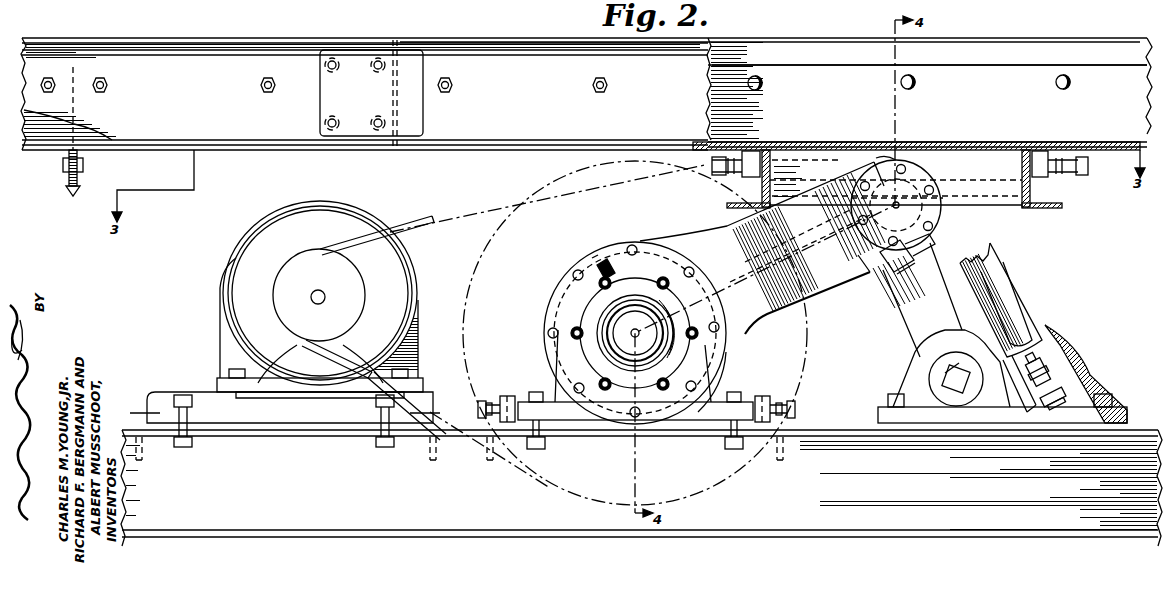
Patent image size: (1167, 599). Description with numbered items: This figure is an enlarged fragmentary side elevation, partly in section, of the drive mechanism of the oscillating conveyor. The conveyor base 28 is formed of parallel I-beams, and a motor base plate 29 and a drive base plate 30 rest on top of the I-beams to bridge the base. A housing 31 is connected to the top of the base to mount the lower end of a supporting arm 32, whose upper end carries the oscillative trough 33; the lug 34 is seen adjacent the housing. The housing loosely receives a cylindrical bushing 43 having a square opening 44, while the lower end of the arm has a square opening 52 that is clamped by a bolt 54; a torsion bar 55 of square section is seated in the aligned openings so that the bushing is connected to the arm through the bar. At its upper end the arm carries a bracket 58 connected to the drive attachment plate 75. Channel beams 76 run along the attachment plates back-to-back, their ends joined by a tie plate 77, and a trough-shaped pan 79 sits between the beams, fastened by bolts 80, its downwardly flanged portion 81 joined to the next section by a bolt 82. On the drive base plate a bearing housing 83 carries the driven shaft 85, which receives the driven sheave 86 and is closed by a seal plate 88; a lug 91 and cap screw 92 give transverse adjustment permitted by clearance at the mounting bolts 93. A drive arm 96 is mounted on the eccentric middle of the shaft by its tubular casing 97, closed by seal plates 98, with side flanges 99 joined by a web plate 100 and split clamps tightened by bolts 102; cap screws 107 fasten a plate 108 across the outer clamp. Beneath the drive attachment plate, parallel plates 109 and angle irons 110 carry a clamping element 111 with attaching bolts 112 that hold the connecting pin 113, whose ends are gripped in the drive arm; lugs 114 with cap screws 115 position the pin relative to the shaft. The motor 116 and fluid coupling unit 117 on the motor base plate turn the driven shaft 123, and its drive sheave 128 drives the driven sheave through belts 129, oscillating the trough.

The conveyor base 28 is at (383, 544).
The motor base plate 29 is at (278, 424).
The drive base plate 30 is at (800, 416).
The housing 31 is at (1090, 354).
The supporting arm 32 is at (890, 330).
The oscillative trough 33 is at (800, 38).
The bracket bolts 34 is at (888, 400).
The cylindrical bushing 43 is at (974, 390).
The square opening 44 is at (940, 397).
The square opening 52 is at (1012, 386).
The bolt 54 is at (1062, 406).
The torsion bar 55 is at (1045, 362).
The bracket 58 is at (796, 178).
The drive attachment plate 75 is at (985, 156).
The channel beam 76 is at (473, 133).
The tie plate 77 is at (355, 130).
The trough-shaped pan 79 is at (845, 78).
The bolt 80 is at (52, 92).
The downwardly flanged portion 81 is at (73, 196).
The bolt 82 is at (84, 167).
The bearing housing 83 is at (712, 400).
The driven shaft 85 is at (621, 325).
The driven sheave 86 is at (726, 483).
The seal plate 88 is at (705, 328).
The lug 91 is at (508, 396).
The cap screw 92 is at (480, 408).
The bolt 93 is at (536, 449).
The drive arm 96 is at (835, 290).
The tubular casing 97 is at (700, 302).
The seal plate 98 is at (722, 268).
The side flange 99 is at (758, 320).
The web plate 100 is at (800, 262).
The bolt 102 is at (940, 240).
The cap screw 107 is at (918, 173).
The plate 108 is at (933, 198).
The parallel plate 109 is at (1000, 206).
The angle iron 110 is at (762, 188).
The clamping element 111 is at (813, 240).
The attaching bolt 112 is at (840, 270).
The connecting pin 113 is at (941, 211).
The lug 114 is at (770, 140).
The cap screw 115 is at (712, 164).
The motor 116 is at (414, 270).
The fluid coupling unit 117 is at (420, 318).
The driven shaft 123 is at (325, 298).
The drive sheave 128 is at (358, 270).
The belt 129 is at (420, 214).